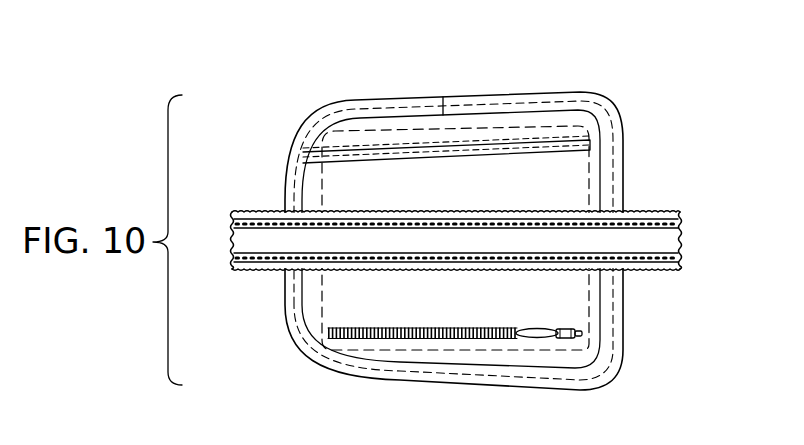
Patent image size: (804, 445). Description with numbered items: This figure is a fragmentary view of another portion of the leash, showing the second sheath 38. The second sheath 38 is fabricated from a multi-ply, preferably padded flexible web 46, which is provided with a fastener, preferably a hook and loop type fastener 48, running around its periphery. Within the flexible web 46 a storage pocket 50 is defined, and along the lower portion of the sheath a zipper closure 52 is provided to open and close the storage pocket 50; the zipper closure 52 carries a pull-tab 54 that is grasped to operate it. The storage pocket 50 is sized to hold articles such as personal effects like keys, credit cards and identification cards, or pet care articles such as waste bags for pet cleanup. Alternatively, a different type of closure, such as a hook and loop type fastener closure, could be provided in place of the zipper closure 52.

The second sheath 38 is at (655, 116).
The flexible web 46 is at (398, 173).
The hook and loop type fastener 48 is at (525, 125).
The storage pocket 50 is at (322, 299).
The zipper closure 52 is at (400, 340).
The pull-tab 54 is at (533, 339).